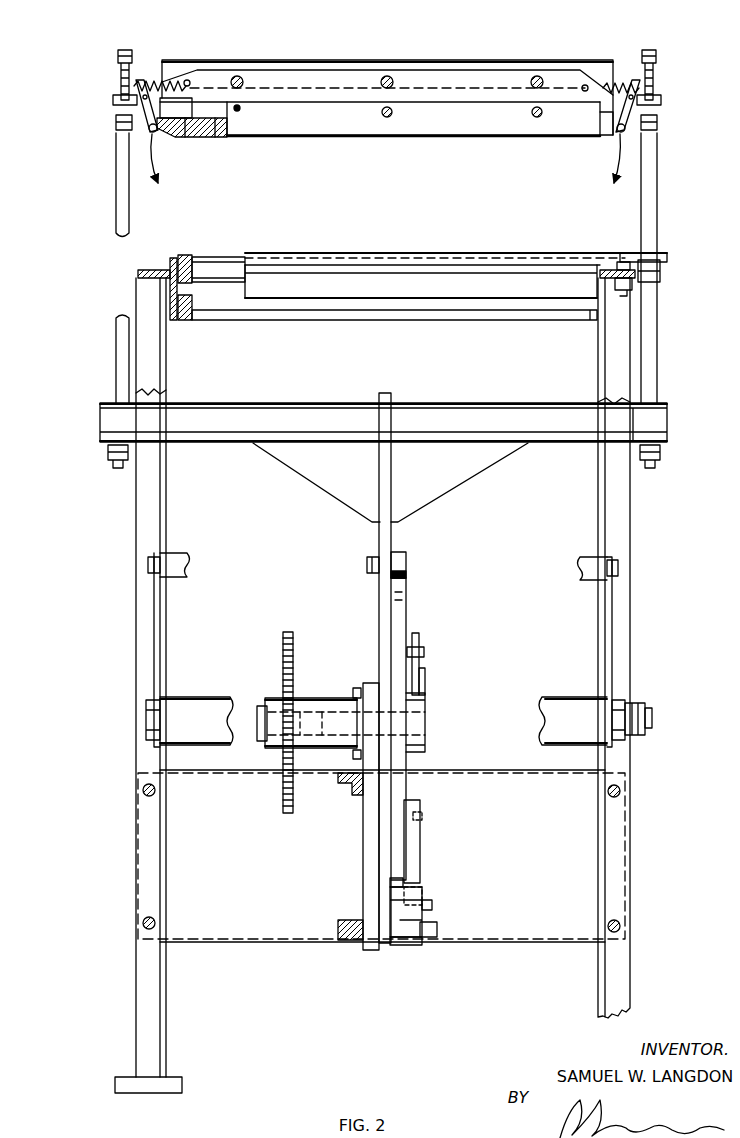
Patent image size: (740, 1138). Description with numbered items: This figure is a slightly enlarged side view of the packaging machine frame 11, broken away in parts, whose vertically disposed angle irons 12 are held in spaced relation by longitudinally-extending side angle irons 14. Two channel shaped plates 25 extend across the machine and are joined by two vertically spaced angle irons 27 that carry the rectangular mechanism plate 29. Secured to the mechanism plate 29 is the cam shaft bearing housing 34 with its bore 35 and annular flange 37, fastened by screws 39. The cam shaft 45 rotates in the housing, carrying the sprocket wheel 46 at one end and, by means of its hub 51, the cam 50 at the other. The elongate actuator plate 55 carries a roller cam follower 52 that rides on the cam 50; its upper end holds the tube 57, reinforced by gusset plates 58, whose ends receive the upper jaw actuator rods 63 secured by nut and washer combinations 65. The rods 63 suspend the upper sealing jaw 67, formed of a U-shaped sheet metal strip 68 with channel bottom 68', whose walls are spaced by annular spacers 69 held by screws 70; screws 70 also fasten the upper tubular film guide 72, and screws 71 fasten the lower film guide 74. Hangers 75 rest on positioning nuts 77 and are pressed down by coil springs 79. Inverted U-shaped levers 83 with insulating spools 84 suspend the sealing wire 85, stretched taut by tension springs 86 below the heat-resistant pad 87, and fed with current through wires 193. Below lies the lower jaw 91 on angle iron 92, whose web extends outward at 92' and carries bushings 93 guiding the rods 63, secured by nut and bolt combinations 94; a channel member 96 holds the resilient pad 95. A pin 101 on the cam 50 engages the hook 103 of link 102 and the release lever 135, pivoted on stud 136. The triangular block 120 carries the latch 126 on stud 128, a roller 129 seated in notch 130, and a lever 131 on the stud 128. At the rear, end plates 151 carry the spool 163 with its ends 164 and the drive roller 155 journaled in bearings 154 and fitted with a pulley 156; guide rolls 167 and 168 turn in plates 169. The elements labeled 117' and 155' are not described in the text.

The packaging machine frame 11 is at (133, 638).
The vertical angle irons 12 is at (134, 961).
The longitudinally-extending side angle irons 14 is at (138, 271).
The channel shaped plates 25 is at (222, 940).
The angle irons 27 is at (358, 784).
The mechanism plate 29 is at (371, 950).
The cam shaft bearing housing 34 is at (300, 748).
The bore 35 is at (325, 748).
The annular flange 37 is at (365, 682).
The screws 39 is at (353, 690).
The cam shaft 45 is at (258, 732).
The sprocket wheel 46 is at (282, 794).
The cam 50 is at (408, 593).
The hub 51 is at (426, 702).
The roller cam follower 52 is at (408, 563).
The actuator plate 55 is at (393, 528).
The tube 57 is at (537, 444).
The reinforcing gusset plates 58 is at (307, 478).
The upper jaw actuator rods 63 is at (113, 196).
The nut and washer combinations 65 is at (108, 453).
The upper sealing jaw 67 is at (343, 57).
The U-shaped strip of sheet metal 68 is at (386, 76).
The channel bottom 68' is at (388, 127).
The annular spacers 69 is at (233, 77).
The screws 70 is at (240, 76).
The screws 71 is at (241, 110).
The upper tubular film guide 72 is at (577, 66).
The lower film guide 74 is at (446, 140).
The hangers 75 is at (112, 100).
The positioning nut 77 is at (114, 123).
The coil springs 79 is at (118, 82).
The inverted U-shaped levers 83 is at (139, 79).
The insulating spool 84 is at (146, 132).
The sealing wire 85 is at (222, 138).
The tension spring 86 is at (149, 80).
The heat-resistant pad 87 is at (186, 136).
The lower jaw 91 is at (600, 249).
The angle iron 92 is at (456, 246).
The horizontal web extension 92' is at (666, 264).
The sleeves or bushings 93 is at (660, 262).
The nut and bolt combinations 94 is at (623, 261).
The resilient pad 95 is at (408, 254).
The channel member 96 is at (458, 259).
The pin 101 is at (424, 651).
The link 102 is at (424, 668).
The hook 103 is at (420, 637).
The nut 117' is at (350, 576).
The triangularly-shaped block 120 is at (406, 954).
The latch 126 is at (389, 900).
The stud 128 is at (438, 929).
The roller 129 is at (395, 880).
The notch 130 is at (423, 892).
The lever 131 is at (432, 906).
The release lever 135 is at (421, 845).
The stud 136 is at (422, 818).
The end plates 151 is at (153, 606).
The bearings 154 is at (147, 722).
The roller 155 is at (383, 723).
The end piece 155' is at (672, 709).
The pulley 156 is at (636, 700).
The spool 163 is at (185, 554).
The spool ends 164 is at (148, 566).
The guide roll 167 is at (224, 314).
The guide roll 168 is at (220, 258).
The plates 169 is at (178, 258).
The wires 193 is at (608, 175).